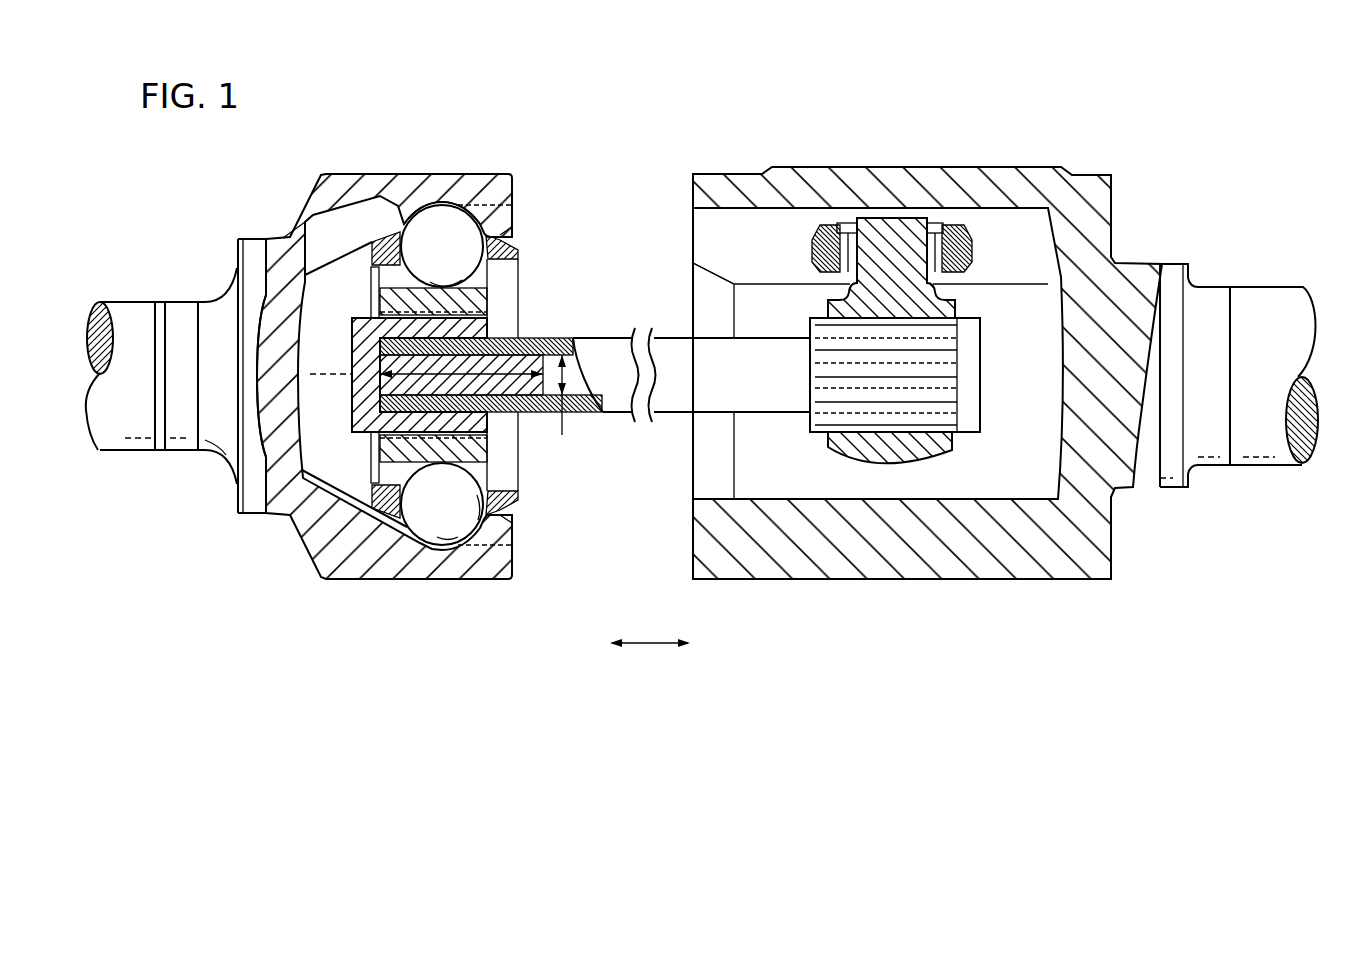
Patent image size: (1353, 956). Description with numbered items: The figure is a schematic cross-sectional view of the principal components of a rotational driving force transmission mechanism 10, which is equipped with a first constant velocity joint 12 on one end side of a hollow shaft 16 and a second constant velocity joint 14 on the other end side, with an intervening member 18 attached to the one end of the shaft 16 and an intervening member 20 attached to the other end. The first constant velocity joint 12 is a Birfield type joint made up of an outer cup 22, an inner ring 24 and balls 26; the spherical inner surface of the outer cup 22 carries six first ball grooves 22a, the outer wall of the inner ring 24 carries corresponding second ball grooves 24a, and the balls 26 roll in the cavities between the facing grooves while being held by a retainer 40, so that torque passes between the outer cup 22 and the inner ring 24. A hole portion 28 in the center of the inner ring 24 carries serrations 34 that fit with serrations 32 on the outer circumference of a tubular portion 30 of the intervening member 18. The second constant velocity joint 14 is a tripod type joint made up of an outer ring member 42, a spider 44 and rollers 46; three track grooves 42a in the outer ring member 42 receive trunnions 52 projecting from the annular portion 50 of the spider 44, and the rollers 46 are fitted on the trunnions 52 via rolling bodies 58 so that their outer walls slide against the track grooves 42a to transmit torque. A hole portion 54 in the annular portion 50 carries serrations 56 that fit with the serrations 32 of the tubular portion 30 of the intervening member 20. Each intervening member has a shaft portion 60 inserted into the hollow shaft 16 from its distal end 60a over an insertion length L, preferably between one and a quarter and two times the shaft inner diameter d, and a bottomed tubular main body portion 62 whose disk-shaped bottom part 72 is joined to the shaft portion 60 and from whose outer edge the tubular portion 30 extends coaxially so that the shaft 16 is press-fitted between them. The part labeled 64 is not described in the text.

The rotational driving force transmission mechanism 10 is at (1191, 114).
The first constant velocity joint 12 is at (506, 150).
The second constant velocity joint 14 is at (819, 134).
The shaft 16 is at (600, 338).
The intervening member 18 is at (353, 357).
The intervening member 20 is at (985, 318).
The outer cup 22 is at (354, 174).
The first ball grooves 22a is at (490, 210).
The inner ring 24 is at (383, 298).
The second ball grooves 24a is at (398, 265).
The balls 26 is at (465, 513).
The hole portion 28 is at (452, 288).
The tubular portion 30 is at (413, 420).
The serrations 32 is at (452, 330).
The serrations 34 is at (475, 213).
The retainer 40 is at (520, 254).
The outer ring member 42 is at (1008, 174).
The track grooves 42a is at (727, 210).
The spider 44 is at (926, 106).
The rollers 46 is at (955, 228).
The annular portion 50 is at (905, 317).
The trunnions 52 is at (882, 235).
The hole portion 54 is at (863, 417).
The serrations 56 is at (948, 428).
The rolling bodies 58 is at (849, 233).
The shaft portion 60 is at (522, 400).
The distal end 60a is at (553, 338).
The main body portion 62 is at (436, 641).
The retaining ring 64 is at (417, 353).
The bottom part 72 is at (366, 420).